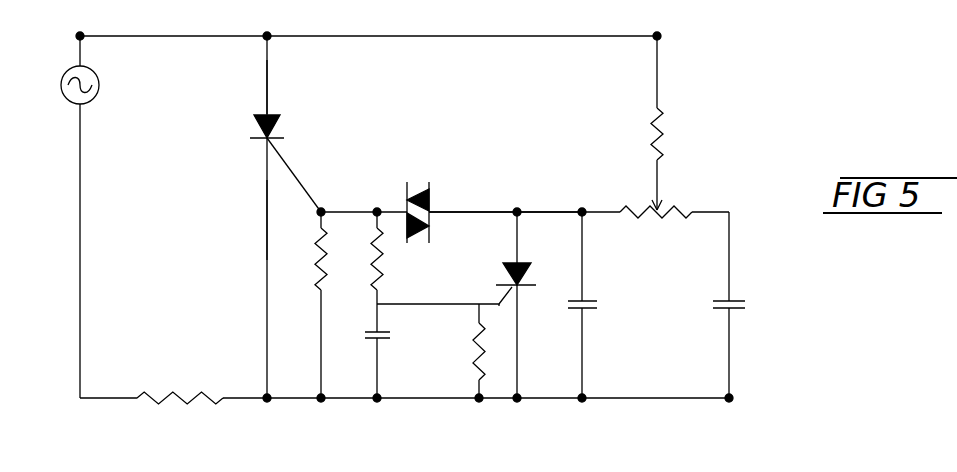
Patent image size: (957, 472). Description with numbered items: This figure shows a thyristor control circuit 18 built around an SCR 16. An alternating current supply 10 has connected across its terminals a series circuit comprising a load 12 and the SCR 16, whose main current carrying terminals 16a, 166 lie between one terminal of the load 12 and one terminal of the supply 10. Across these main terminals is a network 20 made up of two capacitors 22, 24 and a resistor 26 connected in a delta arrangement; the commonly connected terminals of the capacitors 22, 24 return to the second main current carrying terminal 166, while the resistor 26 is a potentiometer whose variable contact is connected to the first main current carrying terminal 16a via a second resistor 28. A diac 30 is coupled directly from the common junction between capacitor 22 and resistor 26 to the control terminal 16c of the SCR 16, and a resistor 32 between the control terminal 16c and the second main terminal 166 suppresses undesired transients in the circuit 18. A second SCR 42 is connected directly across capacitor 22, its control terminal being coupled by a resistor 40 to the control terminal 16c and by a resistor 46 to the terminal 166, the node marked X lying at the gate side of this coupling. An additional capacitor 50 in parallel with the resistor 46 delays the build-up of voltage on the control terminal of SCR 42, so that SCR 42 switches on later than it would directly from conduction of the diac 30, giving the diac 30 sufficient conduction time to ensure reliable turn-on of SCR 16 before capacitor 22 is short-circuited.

The alternating current supply 10 is at (99, 89).
The load 12 is at (152, 400).
The SCR 16 is at (252, 128).
The main current carrying terminal 16a is at (268, 97).
The control terminal 16c is at (293, 170).
The second main current carrying terminal 166 is at (267, 217).
The circuit 18 is at (500, 31).
The network 20 is at (535, 228).
The capacitor 22 is at (588, 311).
The capacitor 24 is at (745, 305).
The resistor 26 is at (672, 206).
The second resistor 28 is at (662, 133).
The diac 30 is at (416, 185).
The resistor 32 is at (316, 255).
The resistor 40 is at (403, 258).
The SCR 42 is at (513, 260).
The resistor 46 is at (475, 338).
The additional capacitor 50 is at (382, 341).
The node X is at (499, 308).